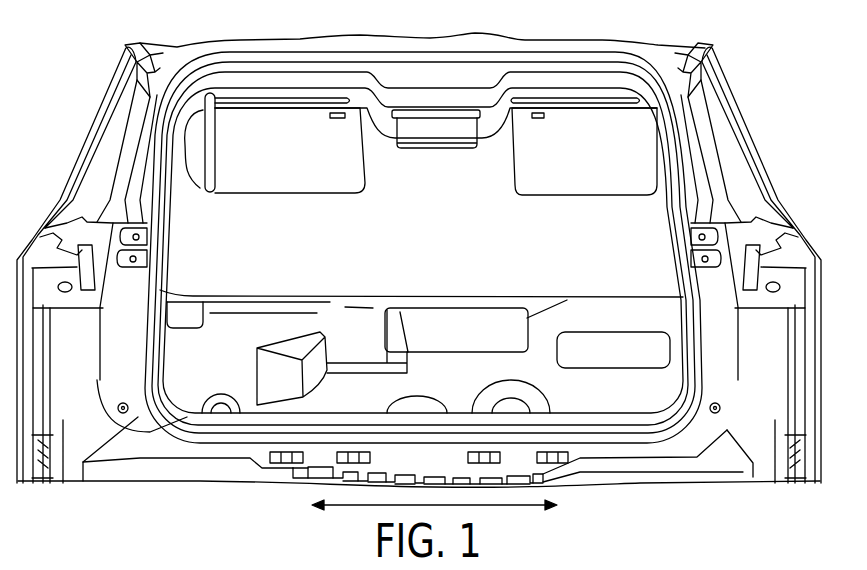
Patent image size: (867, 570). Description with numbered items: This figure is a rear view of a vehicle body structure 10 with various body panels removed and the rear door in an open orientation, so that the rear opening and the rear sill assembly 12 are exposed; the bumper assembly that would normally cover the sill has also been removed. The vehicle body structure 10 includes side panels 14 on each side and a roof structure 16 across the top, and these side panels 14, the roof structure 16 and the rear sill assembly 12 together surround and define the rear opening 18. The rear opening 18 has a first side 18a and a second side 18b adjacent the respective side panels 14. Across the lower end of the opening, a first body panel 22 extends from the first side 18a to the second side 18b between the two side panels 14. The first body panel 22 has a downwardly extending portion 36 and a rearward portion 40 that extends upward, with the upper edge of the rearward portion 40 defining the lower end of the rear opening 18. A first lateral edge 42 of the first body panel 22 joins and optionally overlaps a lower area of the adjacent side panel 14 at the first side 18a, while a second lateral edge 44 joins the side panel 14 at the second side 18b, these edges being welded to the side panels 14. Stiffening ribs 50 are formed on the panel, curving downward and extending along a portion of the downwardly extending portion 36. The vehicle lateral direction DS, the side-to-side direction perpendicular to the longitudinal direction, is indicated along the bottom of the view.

The vehicle body structure 10 is at (768, 70).
The rear sill assembly 12 is at (457, 410).
The side panels 14 is at (125, 358).
The roof structure 16 is at (180, 62).
The rear opening 18 is at (143, 417).
The first side of the rear opening 18a is at (153, 367).
The second side of the rear opening 18b is at (682, 365).
The first body panel 22 is at (150, 440).
The downwardly extending portion 36 is at (258, 466).
The rearward portion 40 is at (608, 443).
The first lateral edge 42 is at (117, 430).
The second lateral edge 44 is at (720, 430).
The stiffening ribs 50 is at (447, 478).
The vehicle lateral direction DS is at (500, 508).